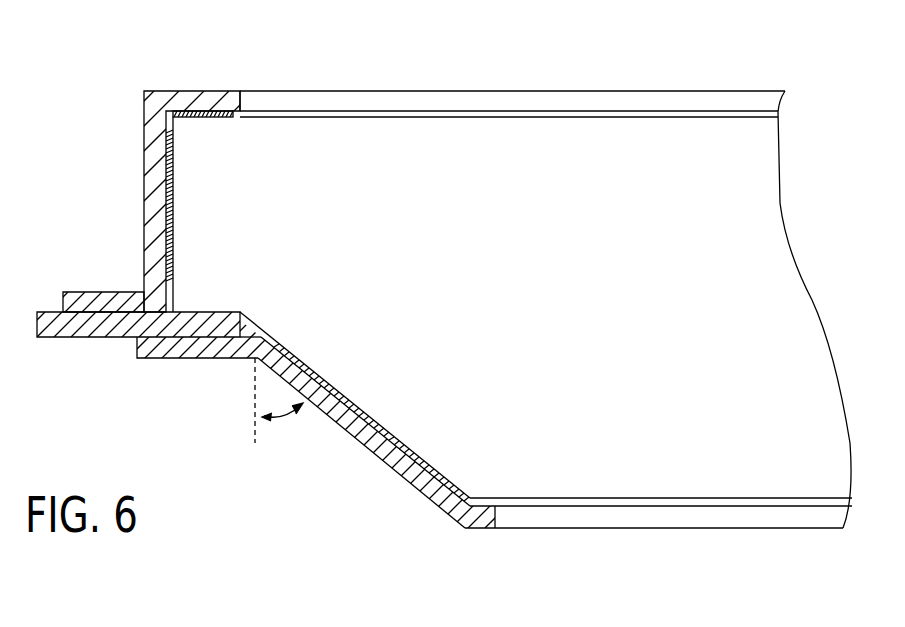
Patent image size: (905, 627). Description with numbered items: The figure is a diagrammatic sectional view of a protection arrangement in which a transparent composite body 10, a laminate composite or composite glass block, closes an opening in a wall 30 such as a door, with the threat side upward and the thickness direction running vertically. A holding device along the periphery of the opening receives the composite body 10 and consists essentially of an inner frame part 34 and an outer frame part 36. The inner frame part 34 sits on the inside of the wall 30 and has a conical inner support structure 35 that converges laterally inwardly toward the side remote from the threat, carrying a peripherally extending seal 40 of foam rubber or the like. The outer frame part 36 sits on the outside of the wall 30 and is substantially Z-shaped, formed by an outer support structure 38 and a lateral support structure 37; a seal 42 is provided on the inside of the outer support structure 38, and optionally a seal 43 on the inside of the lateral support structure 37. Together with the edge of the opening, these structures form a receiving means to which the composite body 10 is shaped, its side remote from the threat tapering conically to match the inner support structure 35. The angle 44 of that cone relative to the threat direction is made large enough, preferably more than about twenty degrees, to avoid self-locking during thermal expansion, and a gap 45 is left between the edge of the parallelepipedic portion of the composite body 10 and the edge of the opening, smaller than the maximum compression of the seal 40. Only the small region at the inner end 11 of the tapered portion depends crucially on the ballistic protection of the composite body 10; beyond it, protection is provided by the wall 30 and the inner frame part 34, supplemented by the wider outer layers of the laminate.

The composite body 10 is at (778, 241).
The inner end 11 is at (582, 502).
The wall 30 is at (89, 330).
The inner frame part 34 is at (705, 528).
The inner support structure 35 is at (362, 435).
The outer frame part 36 is at (452, 100).
The lateral support structure 37 is at (153, 163).
The outer support structure 38 is at (167, 95).
The seal 40 is at (423, 470).
The seal 42 is at (218, 112).
The seal 43 is at (168, 214).
The angle 44 is at (268, 398).
The gap 45 is at (197, 345).